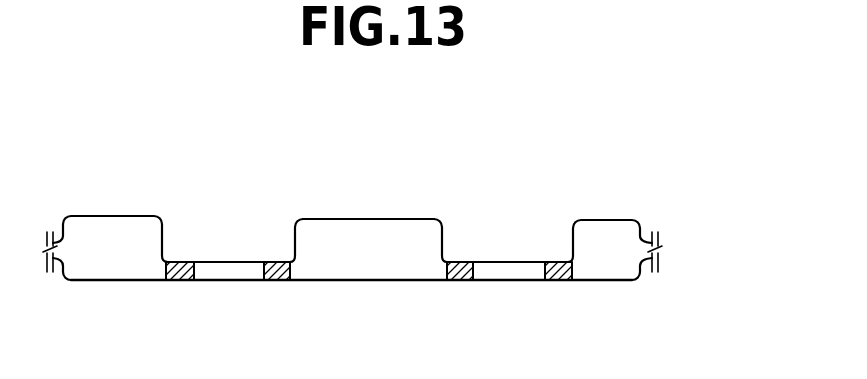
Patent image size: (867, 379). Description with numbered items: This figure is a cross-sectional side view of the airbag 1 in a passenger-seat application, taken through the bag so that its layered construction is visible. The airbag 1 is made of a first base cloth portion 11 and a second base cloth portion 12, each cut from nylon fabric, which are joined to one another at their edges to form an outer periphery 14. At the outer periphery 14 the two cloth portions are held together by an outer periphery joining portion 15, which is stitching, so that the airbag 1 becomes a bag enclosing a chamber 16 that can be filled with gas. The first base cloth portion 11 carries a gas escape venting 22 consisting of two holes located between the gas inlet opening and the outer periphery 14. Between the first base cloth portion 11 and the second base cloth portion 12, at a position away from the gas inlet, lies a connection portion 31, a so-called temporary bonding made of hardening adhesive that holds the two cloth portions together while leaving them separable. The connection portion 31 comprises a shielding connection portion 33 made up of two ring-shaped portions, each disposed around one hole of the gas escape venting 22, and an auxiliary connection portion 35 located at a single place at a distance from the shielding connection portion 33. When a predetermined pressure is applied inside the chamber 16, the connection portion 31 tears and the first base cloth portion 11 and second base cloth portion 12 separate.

The airbag 1 is at (666, 125).
The first base cloth portion 11 is at (409, 219).
The second base cloth portion 12 is at (372, 282).
The outer periphery 14 is at (660, 250).
The outer periphery joining portion 15 is at (656, 241).
The chamber 16 is at (340, 226).
The gas escape venting 22 is at (228, 282).
The connection portion 31 is at (157, 280).
The shielding connection portion 33 is at (177, 273).
The auxiliary connection portion 35 is at (558, 281).